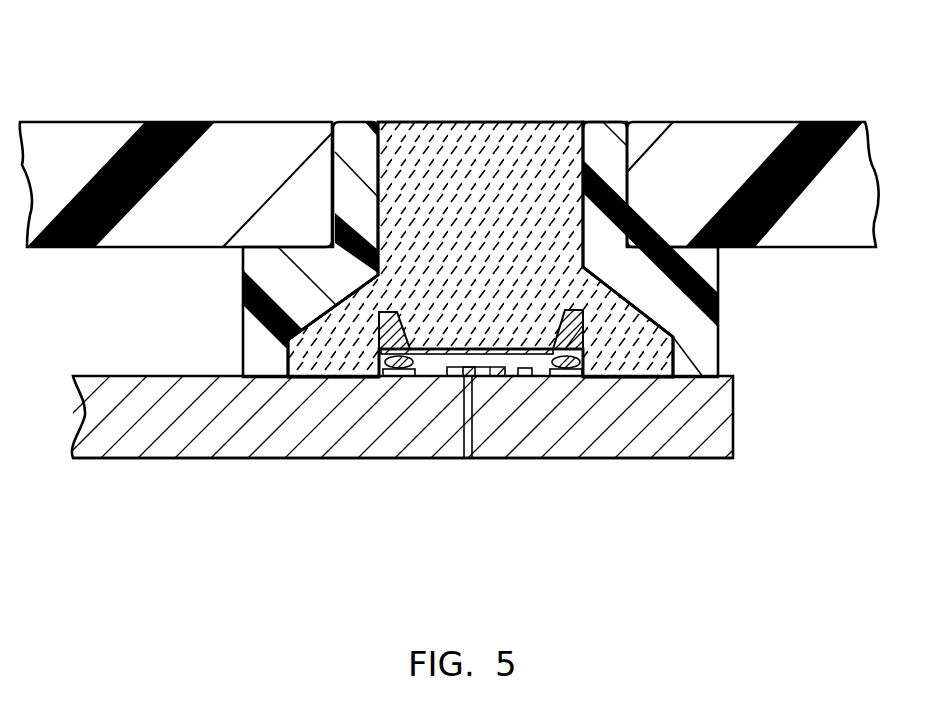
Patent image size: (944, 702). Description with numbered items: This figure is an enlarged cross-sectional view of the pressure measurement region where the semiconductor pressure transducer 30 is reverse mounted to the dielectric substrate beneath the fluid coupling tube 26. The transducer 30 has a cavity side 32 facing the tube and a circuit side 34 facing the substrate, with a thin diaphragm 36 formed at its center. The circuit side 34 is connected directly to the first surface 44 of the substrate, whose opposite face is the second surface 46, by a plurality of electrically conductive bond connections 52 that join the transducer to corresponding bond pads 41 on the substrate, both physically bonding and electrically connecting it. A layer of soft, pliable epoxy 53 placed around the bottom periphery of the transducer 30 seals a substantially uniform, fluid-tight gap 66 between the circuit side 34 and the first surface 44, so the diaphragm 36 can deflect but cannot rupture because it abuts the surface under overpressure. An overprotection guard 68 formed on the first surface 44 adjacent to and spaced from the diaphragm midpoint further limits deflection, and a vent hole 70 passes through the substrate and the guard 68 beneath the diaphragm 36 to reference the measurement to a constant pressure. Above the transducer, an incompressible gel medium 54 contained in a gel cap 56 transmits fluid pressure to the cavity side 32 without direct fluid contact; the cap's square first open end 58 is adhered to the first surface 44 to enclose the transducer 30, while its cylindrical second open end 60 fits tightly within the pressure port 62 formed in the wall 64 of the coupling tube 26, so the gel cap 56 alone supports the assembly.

The fluid coupling tube 26 is at (176, 122).
The second open end 60 is at (358, 122).
The cavity side 32 is at (455, 318).
The incompressible gel medium 54 is at (533, 150).
The pressure port 62 is at (572, 148).
The wall 64 is at (742, 148).
The gel cap 56 is at (722, 300).
The semiconductor pressure transducer 30 is at (600, 328).
The first surface 44 is at (157, 376).
The second surface 46 is at (112, 458).
The first open end 58 is at (290, 378).
The soft pliable epoxy layer 53 is at (343, 377).
The electrically conductive bond connections 52 is at (378, 375).
The bond pad 41 is at (402, 355).
The diaphragm 36 is at (457, 372).
The overprotection guard 68 is at (467, 377).
The vent hole 70 is at (490, 442).
The circuit side 34 is at (536, 362).
The gap 66 is at (525, 377).